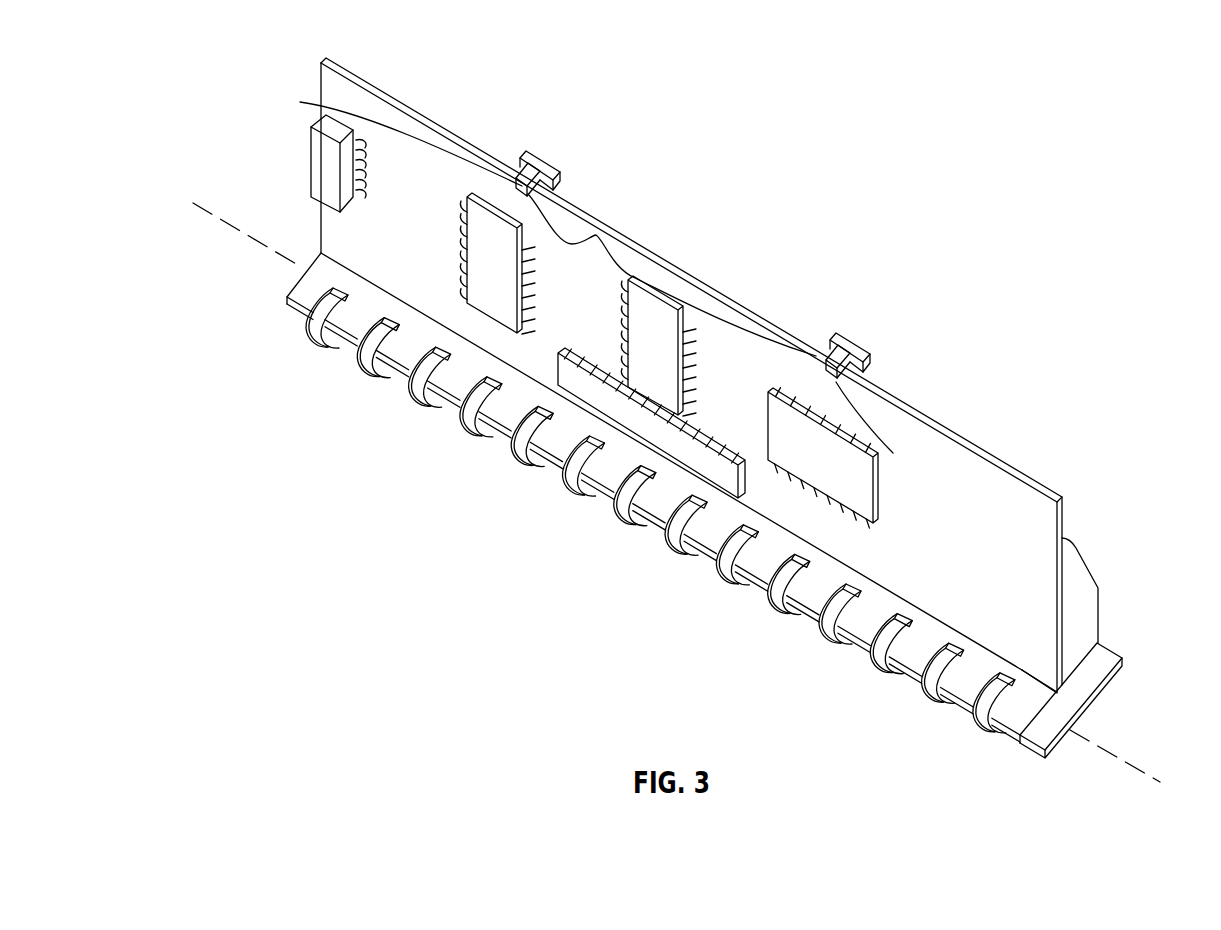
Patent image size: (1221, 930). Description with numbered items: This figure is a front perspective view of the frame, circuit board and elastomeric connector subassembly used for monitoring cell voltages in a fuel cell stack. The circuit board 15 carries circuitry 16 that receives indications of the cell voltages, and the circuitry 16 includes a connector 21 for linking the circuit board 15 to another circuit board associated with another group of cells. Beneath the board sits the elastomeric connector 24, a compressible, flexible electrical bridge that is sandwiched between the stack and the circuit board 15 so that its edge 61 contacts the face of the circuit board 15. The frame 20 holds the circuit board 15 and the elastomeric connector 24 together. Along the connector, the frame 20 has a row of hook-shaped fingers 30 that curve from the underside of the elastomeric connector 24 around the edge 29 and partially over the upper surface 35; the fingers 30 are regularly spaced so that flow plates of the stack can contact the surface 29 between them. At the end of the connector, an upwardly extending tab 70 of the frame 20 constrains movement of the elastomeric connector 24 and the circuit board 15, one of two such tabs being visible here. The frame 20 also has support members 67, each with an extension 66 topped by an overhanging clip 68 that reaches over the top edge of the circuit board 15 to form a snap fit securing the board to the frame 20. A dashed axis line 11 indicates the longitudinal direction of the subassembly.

The longitudinal axis 11 is at (265, 243).
The circuit board 15 is at (1113, 694).
The circuitry 16 is at (590, 233).
The frame 20 is at (1063, 505).
The connector 21 is at (312, 135).
The elastomeric connector 24 is at (692, 557).
The edge 29 is at (497, 423).
The hook-shaped fingers 30 is at (815, 627).
The upper surface 35 is at (1027, 714).
The edge 61 is at (1022, 670).
The extension 66 is at (558, 170).
The support member 67 is at (715, 227).
The overhanging clip 68 is at (527, 173).
The tab 70 is at (1097, 687).